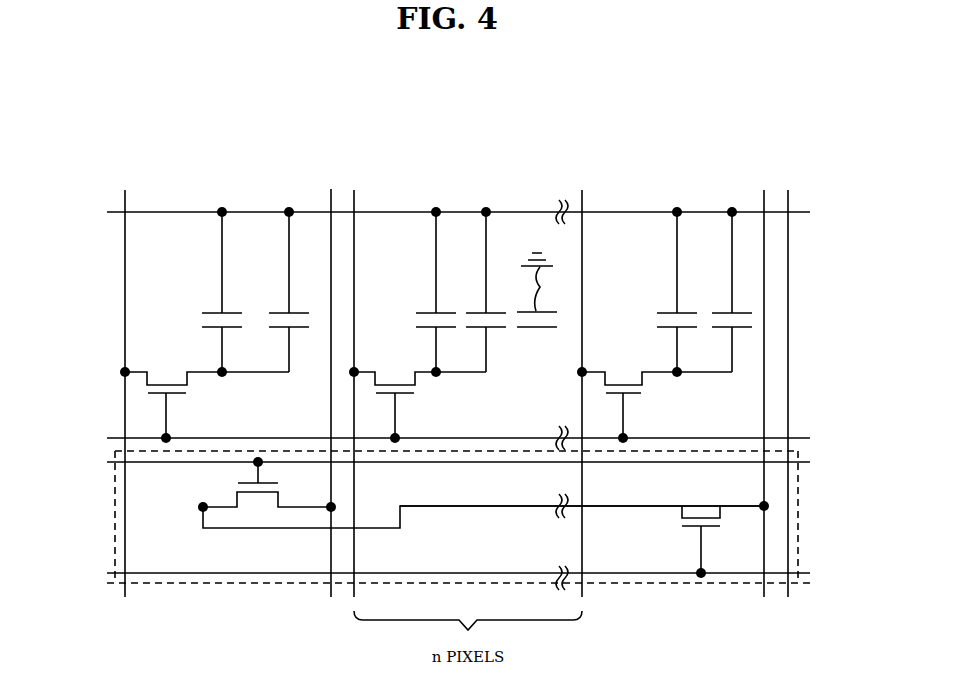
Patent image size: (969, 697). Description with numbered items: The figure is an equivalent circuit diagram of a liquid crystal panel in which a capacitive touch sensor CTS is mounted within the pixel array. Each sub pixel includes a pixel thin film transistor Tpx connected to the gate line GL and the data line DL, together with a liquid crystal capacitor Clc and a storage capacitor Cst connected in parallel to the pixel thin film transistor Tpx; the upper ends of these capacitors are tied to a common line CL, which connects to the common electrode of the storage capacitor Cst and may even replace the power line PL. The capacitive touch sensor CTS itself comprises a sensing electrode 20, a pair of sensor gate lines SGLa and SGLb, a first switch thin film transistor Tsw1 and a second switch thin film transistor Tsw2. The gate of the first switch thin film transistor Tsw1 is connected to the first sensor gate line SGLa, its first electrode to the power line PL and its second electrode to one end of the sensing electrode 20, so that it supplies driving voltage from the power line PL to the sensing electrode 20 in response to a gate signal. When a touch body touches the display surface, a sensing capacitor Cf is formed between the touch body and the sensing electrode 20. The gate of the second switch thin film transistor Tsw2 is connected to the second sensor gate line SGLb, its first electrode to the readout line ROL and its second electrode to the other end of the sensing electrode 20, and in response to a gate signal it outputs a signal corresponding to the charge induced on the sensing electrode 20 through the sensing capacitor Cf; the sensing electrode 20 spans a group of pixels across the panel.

The sensing electrode 20 is at (497, 512).
The data line DL is at (466, 381).
The power line PL is at (331, 199).
The readout line ROL is at (763, 381).
The common line CL is at (472, 212).
The gate line GL is at (443, 437).
The first sensor gate line SGLa is at (435, 462).
The second sensor gate line SGLb is at (482, 573).
The capacitive touch sensor CTS is at (800, 511).
The liquid crystal capacitor Clc is at (225, 292).
The storage capacitor Cst is at (293, 292).
The pixel thin film transistor Tpx is at (207, 393).
The sensing capacitor Cf is at (535, 505).
The first switch thin film transistor Tsw1 is at (483, 495).
The second switch thin film transistor Tsw2 is at (700, 528).